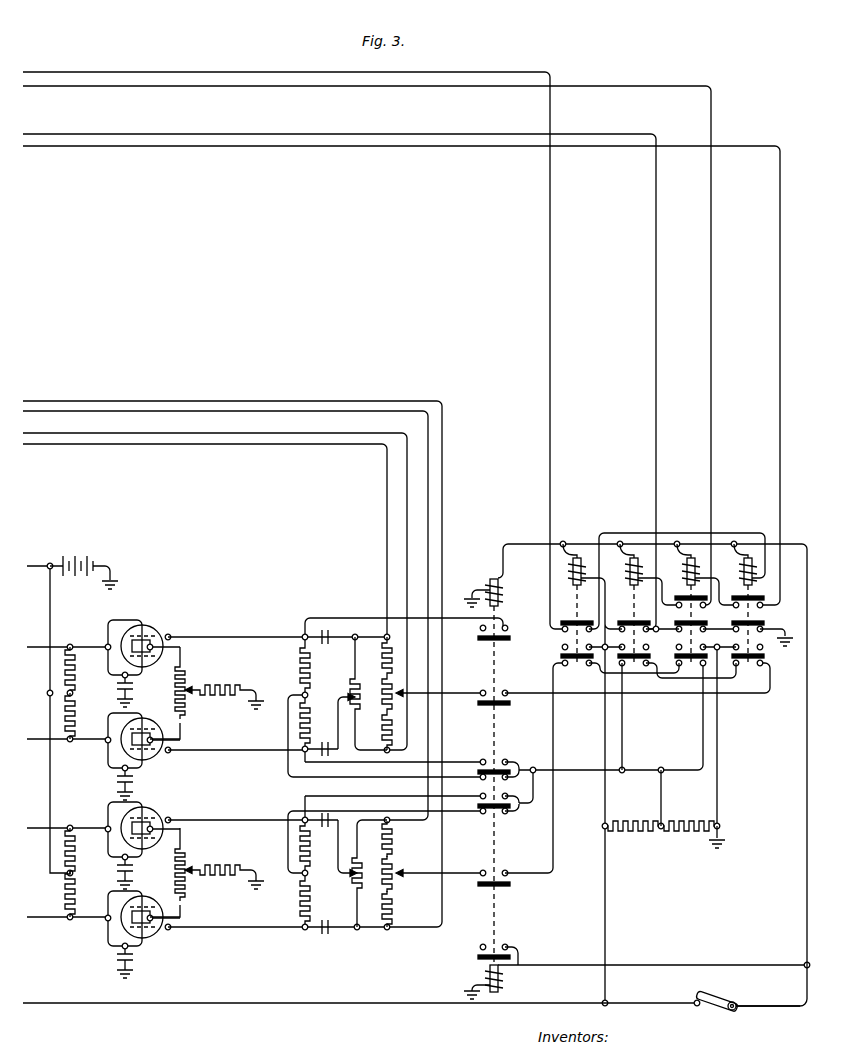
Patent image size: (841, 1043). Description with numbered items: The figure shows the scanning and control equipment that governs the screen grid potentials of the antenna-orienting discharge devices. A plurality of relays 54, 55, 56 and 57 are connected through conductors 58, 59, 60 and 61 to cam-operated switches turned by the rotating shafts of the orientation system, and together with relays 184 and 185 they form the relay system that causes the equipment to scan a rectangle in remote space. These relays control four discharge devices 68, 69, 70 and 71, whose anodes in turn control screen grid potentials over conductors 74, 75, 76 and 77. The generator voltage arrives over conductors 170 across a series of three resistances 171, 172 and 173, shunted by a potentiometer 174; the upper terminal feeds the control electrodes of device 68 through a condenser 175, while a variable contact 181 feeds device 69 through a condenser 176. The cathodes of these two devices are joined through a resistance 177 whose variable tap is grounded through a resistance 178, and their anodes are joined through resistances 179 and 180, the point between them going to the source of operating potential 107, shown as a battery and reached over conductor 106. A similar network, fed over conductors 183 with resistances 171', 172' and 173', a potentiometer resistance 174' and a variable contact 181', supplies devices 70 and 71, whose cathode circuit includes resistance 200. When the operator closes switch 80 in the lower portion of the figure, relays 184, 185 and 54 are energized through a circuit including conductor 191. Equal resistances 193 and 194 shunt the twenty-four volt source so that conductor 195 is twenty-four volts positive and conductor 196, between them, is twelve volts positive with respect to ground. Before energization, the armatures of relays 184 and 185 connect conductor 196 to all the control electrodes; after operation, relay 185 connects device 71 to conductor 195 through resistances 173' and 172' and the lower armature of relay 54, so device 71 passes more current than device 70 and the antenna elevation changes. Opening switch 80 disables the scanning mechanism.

The conductor 58 is at (45, 71).
The conductor 59 is at (38, 86).
The conductor 60 is at (45, 134).
The conductor 61 is at (38, 146).
The conductors 183 is at (49, 411).
The conductors 170 is at (58, 433).
The conductor 106 is at (35, 564).
The source of operating potential 107 is at (74, 560).
The conductor 74 is at (33, 645).
The conductor 75 is at (33, 737).
The conductor 76 is at (33, 826).
The conductor 77 is at (38, 915).
The resistance 179 is at (76, 669).
The resistance 180 is at (76, 715).
The discharge device 68 is at (157, 629).
The discharge device 69 is at (158, 754).
The discharge device 70 is at (157, 814).
The discharge device 71 is at (158, 933).
The resistance 177 is at (188, 681).
The resistance 178 is at (223, 701).
The resistance 200 is at (216, 877).
The condenser 175 is at (323, 642).
The condenser 176 is at (326, 743).
The resistance 171 is at (374, 656).
The resistance 172 is at (423, 693).
The resistance 173 is at (375, 726).
The potentiometer 174 is at (360, 693).
The variable contact 181 is at (331, 715).
The resistance 171' is at (408, 839).
The resistance 172' is at (432, 874).
The resistance 173' is at (408, 909).
The potentiometer resistance 174' is at (356, 873).
The variable contact 181' is at (335, 848).
The relay 184 is at (500, 587).
The relay 185 is at (500, 980).
The relay 54 is at (572, 574).
The relay 55 is at (629, 573).
The relay 56 is at (686, 573).
The relay 57 is at (743, 573).
The resistance 193 is at (621, 841).
The resistance 194 is at (682, 841).
The conductor 195 is at (602, 843).
The conductor 196 is at (661, 797).
The conductor 191 is at (44, 1002).
The switch 80 is at (722, 1000).